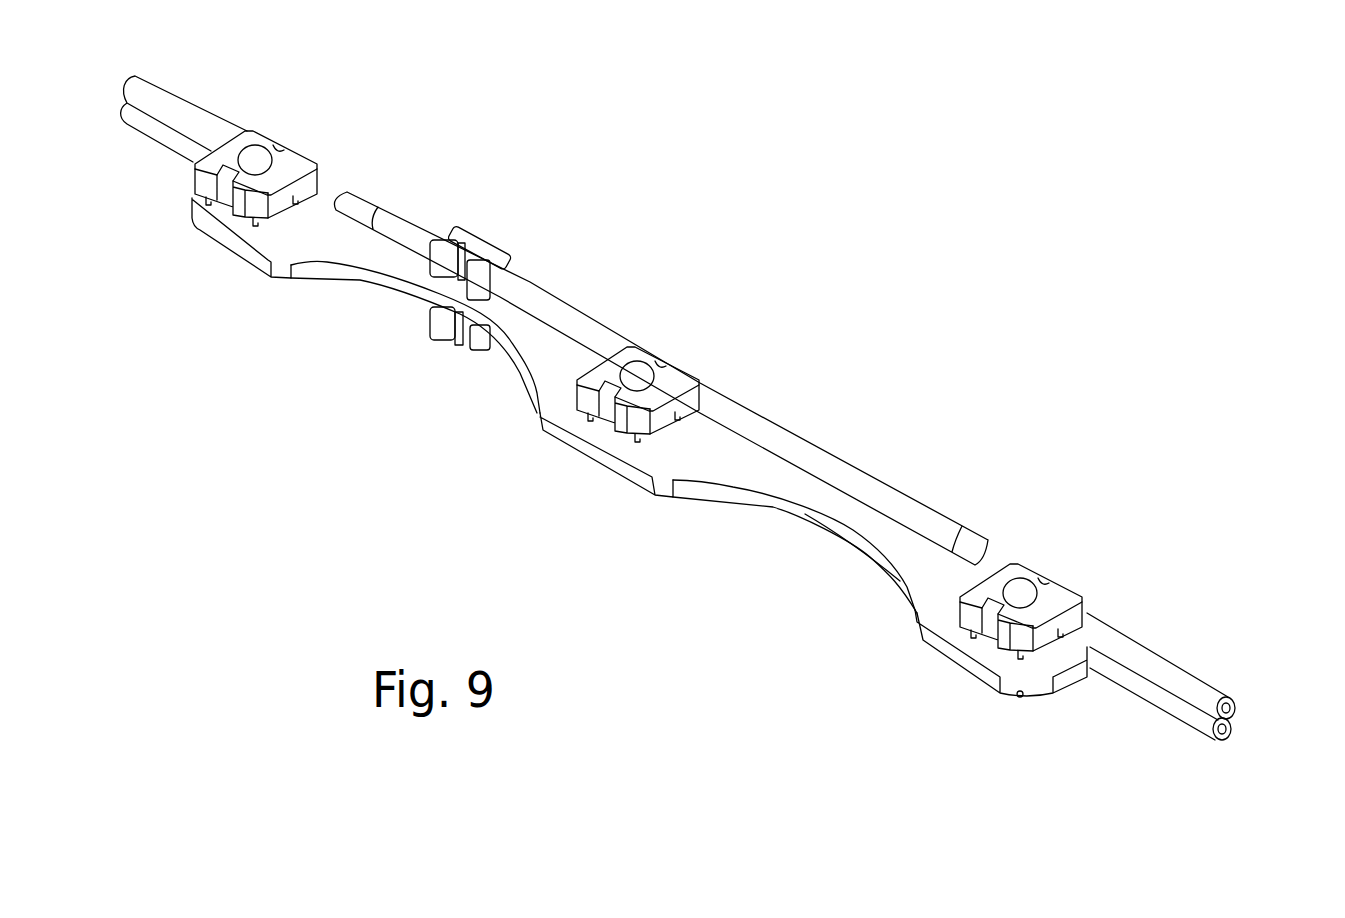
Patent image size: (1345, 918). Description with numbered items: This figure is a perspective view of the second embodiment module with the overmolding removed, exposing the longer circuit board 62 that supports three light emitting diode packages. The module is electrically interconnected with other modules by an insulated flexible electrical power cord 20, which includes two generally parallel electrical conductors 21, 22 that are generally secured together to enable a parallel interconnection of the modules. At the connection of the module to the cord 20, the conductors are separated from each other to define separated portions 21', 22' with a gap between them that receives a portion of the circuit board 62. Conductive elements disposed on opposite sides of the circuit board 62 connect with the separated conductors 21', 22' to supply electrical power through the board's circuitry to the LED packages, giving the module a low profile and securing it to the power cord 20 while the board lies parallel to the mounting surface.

The insulated flexible electrical power cord 20 is at (1147, 654).
The electrical conductor 21 is at (1269, 704).
The electrical conductor 22 is at (1253, 754).
The separated portion 21' is at (661, 378).
The separated portion 22' is at (852, 555).
The longer circuit board 62 is at (958, 660).